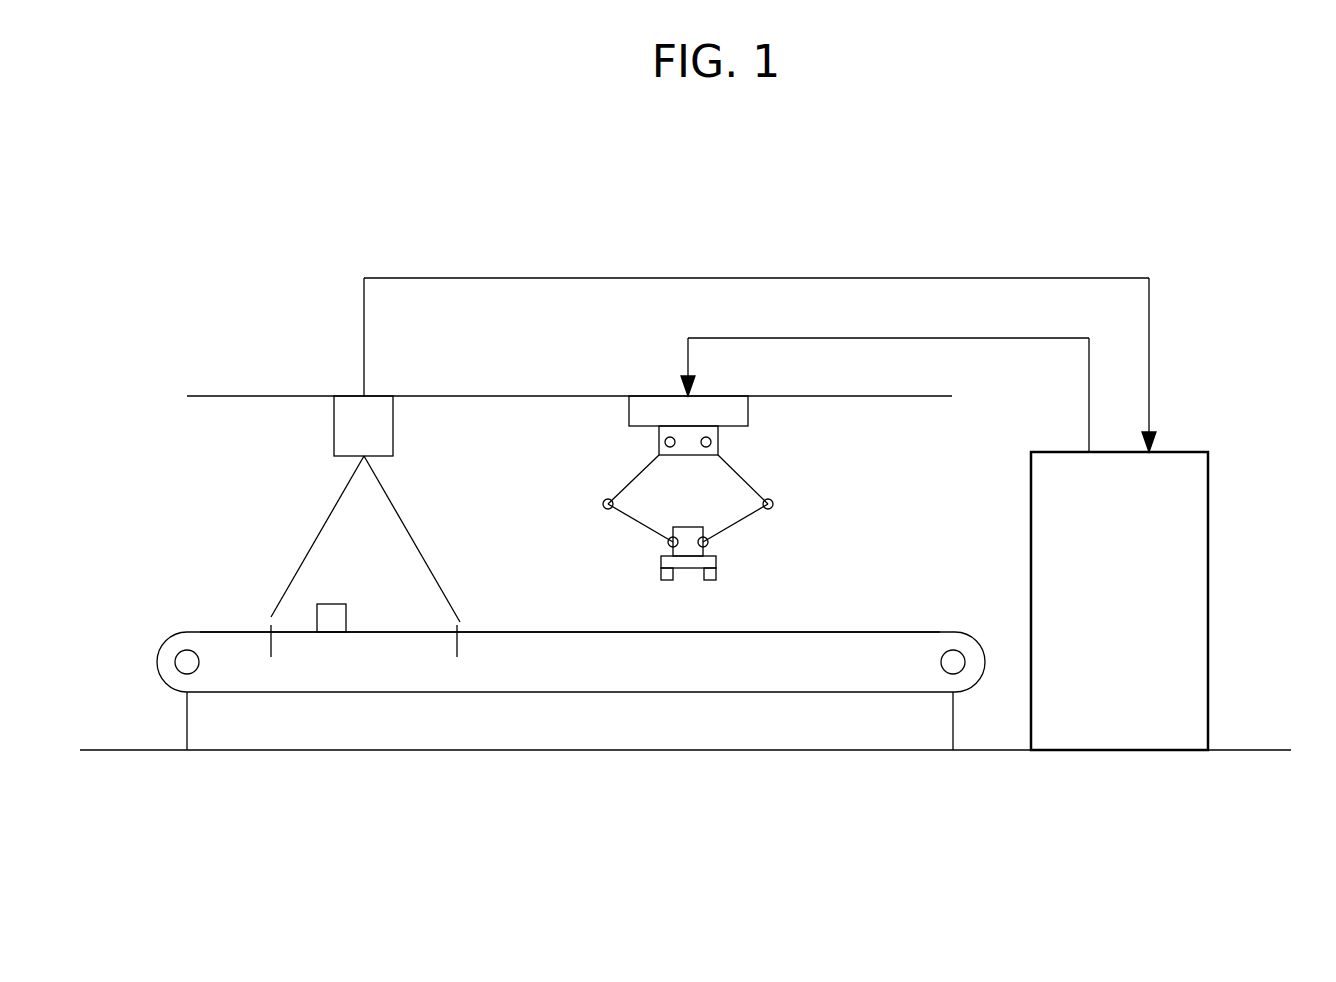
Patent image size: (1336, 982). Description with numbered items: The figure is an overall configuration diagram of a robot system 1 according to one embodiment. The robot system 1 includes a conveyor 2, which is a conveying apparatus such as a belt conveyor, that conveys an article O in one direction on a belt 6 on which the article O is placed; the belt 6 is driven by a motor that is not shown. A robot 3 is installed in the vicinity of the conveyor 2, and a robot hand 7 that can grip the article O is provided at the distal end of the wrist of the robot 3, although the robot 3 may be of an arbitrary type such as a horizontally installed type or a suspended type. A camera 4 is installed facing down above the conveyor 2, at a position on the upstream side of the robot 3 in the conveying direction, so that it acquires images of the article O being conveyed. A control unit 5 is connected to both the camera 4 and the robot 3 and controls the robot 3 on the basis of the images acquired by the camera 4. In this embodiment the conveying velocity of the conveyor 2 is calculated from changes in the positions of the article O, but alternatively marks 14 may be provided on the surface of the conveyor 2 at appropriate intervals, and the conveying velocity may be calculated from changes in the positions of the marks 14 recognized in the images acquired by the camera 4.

The robot system 1 is at (296, 188).
The conveyor 2 is at (184, 620).
The robot 3 is at (775, 442).
The camera 4 is at (334, 425).
The control unit 5 is at (1208, 626).
The belt 6 is at (517, 632).
The robot hand 7 is at (710, 580).
The marks 14 is at (375, 655).
The article O is at (325, 604).